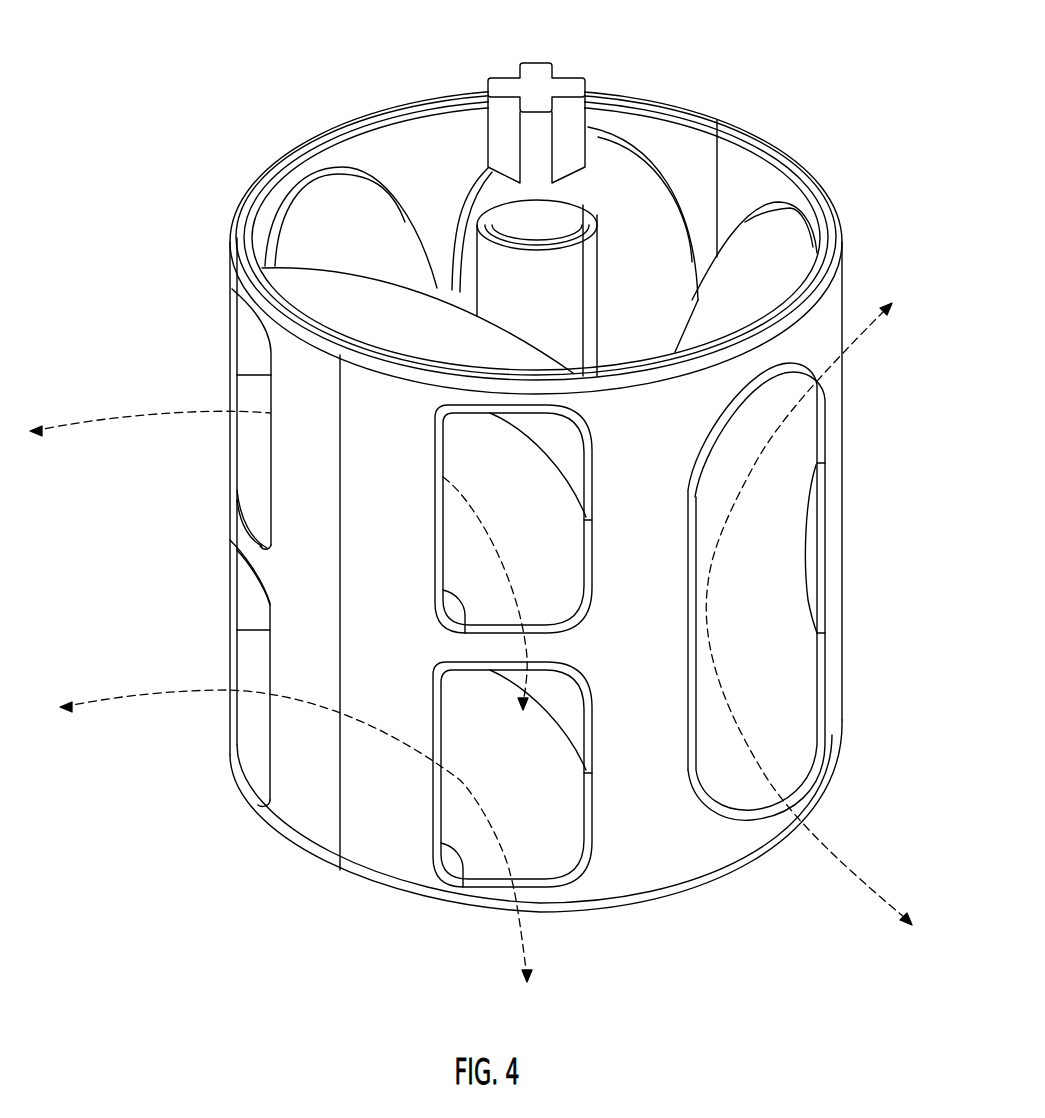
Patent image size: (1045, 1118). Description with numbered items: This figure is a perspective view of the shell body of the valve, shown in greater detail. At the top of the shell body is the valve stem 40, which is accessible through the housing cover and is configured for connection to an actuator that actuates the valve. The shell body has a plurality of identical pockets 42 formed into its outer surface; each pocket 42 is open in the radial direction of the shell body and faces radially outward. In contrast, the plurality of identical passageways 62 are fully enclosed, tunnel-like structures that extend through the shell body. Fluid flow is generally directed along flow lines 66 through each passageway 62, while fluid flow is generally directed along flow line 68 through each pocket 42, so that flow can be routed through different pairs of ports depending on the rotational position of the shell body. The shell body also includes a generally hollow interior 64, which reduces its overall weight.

The valve stem 40 is at (545, 80).
The pocket 42 is at (358, 210).
The passageway 62 is at (250, 348).
The hollow interior 64 is at (440, 193).
The flow lines 66 is at (106, 420).
The flow line 68 is at (847, 347).